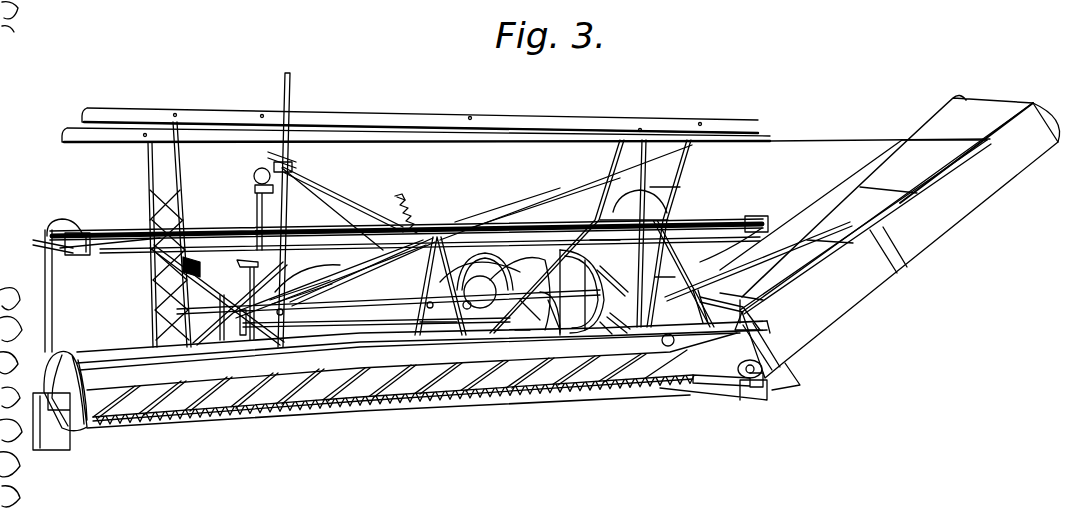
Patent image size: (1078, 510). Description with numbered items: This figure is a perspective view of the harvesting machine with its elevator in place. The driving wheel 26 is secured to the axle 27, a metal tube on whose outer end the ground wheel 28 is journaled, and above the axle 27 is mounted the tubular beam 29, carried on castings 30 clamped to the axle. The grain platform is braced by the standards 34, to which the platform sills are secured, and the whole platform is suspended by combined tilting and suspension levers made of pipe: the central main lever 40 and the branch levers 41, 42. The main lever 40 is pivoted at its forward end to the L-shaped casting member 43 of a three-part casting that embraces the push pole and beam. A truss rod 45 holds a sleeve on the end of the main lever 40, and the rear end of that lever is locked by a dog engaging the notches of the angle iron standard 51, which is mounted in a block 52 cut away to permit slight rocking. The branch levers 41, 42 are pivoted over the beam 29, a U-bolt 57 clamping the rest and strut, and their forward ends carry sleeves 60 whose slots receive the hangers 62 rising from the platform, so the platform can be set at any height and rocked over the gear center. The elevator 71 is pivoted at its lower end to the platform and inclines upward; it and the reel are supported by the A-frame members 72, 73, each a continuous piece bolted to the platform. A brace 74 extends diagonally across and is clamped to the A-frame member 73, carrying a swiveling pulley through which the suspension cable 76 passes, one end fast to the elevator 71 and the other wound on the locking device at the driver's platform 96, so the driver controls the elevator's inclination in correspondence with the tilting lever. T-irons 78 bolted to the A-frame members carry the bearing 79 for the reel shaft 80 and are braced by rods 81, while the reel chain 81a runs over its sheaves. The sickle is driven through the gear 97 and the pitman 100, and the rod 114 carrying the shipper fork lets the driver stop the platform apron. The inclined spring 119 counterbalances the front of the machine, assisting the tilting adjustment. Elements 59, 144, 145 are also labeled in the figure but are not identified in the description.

The driving wheel 26 is at (609, 316).
The axle 27 is at (355, 326).
The ground wheel 28 is at (217, 295).
The tubular beam 29 is at (322, 311).
The castings 30 is at (520, 335).
The standards 34 is at (540, 335).
The main lever 40 is at (340, 215).
The branch lever 41 is at (485, 281).
The branch lever 42 is at (357, 284).
The casting member 43 is at (420, 340).
The truss rod 45 is at (397, 197).
The angle iron standard 51 is at (290, 84).
The block or bracket 52 is at (592, 272).
The U-bolt 57 is at (316, 264).
The arch arm 59 is at (397, 267).
The sleeves 60 is at (243, 310).
The hangers 62 is at (221, 302).
The elevator 71 is at (912, 252).
The A-frame member 72 is at (66, 222).
The A-frame member 73 is at (628, 212).
The brace 74 is at (612, 168).
The suspension cable 76 is at (296, 200).
The T-irons 78 is at (80, 258).
The bearing 79 is at (72, 262).
The reel shaft 80 is at (100, 236).
The rods 81 is at (46, 298).
The reel chain 81a is at (698, 255).
The driver's platform 96 is at (238, 268).
The gear 97 is at (509, 224).
The pitman 100 is at (735, 386).
The rod 114 is at (640, 166).
The spring 119 is at (403, 196).
The rod 144 is at (362, 272).
The rod 145 is at (555, 188).